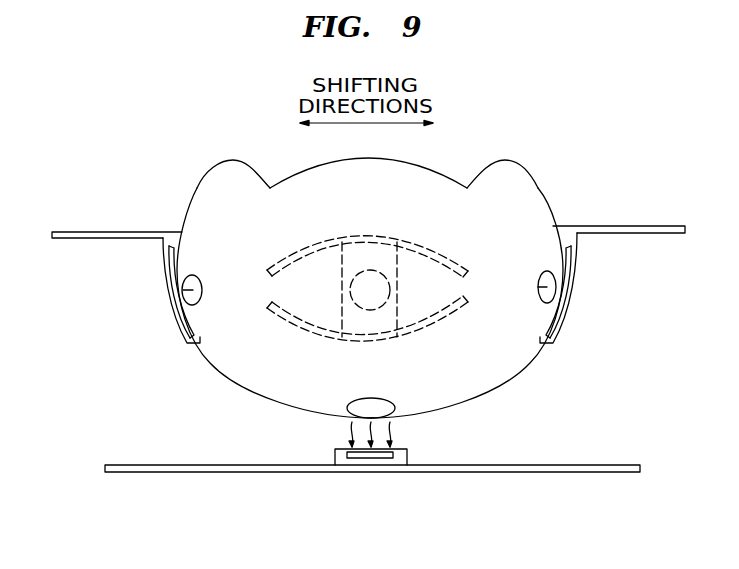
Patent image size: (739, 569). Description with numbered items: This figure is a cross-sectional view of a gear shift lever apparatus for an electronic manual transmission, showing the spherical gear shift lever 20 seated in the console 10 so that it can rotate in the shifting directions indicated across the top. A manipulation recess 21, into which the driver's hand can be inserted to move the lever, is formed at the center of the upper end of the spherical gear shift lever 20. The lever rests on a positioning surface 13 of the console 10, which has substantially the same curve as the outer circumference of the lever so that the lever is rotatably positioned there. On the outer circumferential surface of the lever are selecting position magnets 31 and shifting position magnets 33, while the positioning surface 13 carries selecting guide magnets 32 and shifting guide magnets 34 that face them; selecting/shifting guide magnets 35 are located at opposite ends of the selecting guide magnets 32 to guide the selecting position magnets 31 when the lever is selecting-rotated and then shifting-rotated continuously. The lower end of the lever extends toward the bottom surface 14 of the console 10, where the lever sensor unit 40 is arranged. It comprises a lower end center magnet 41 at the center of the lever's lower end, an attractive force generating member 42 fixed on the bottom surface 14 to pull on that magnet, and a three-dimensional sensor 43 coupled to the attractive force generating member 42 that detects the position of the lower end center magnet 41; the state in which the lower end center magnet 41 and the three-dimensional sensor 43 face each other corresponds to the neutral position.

The console 10 is at (75, 233).
The positioning surface 13 is at (160, 262).
The bottom surface 14 is at (600, 465).
The spherical gear shift lever 20 is at (303, 190).
The manipulation recess 21 is at (428, 168).
The selecting position magnet 31 is at (384, 277).
The selecting guide magnet 32 is at (397, 315).
The shifting position magnet 33 is at (168, 292).
The shifting guide magnet 34 is at (175, 318).
The selecting/shifting guide magnet 35 is at (293, 258).
The lever sensor unit 40 is at (327, 457).
The lower end center magnet 41 is at (348, 408).
The attractive force generating member 42 is at (400, 458).
The three-dimensional sensor 43 is at (358, 452).